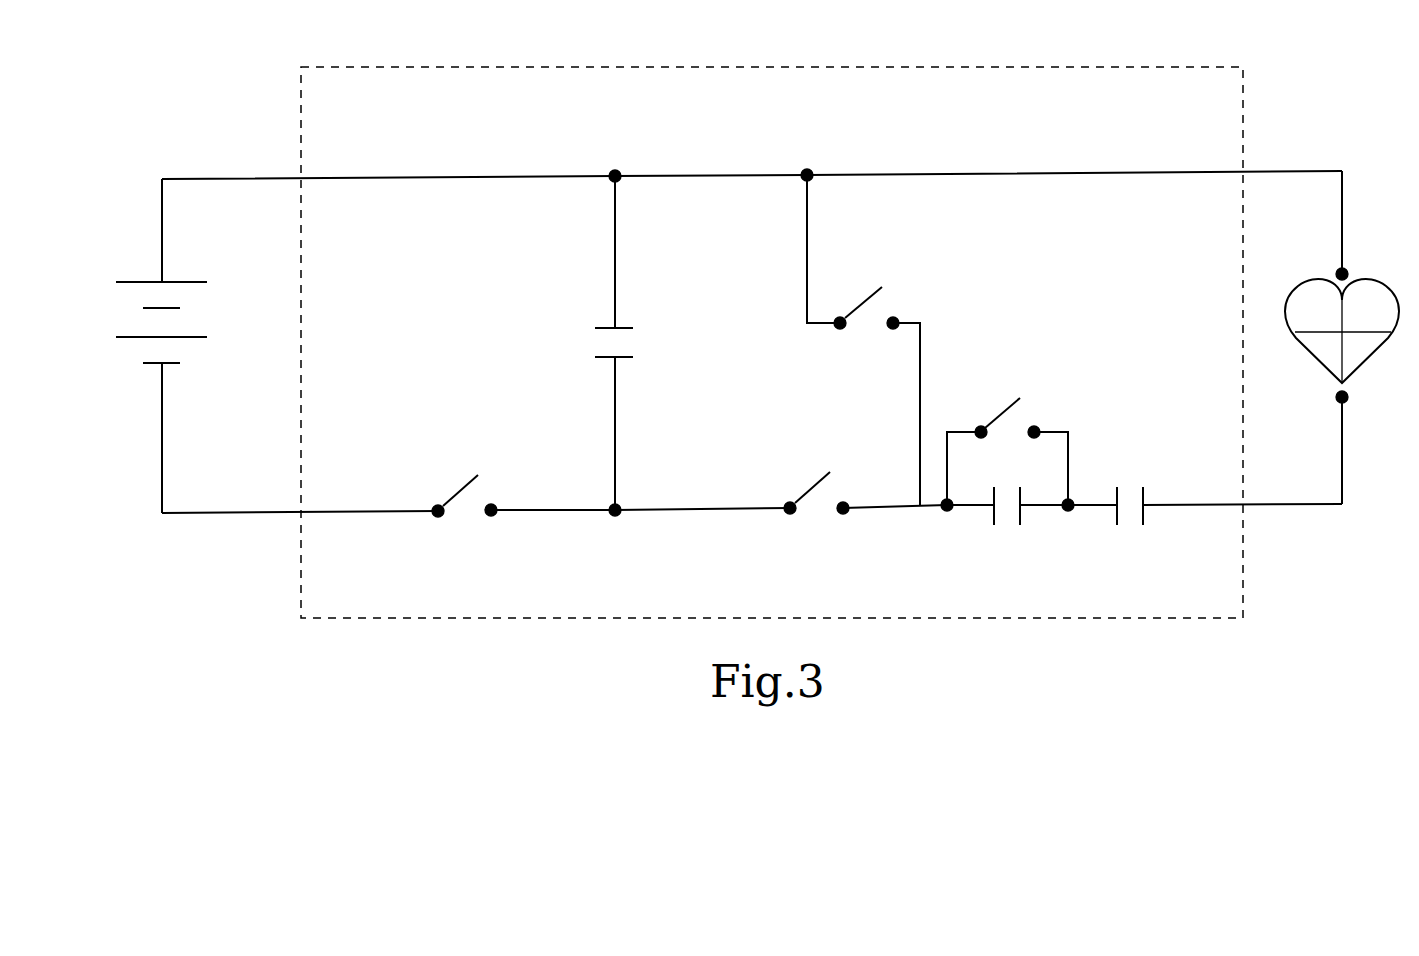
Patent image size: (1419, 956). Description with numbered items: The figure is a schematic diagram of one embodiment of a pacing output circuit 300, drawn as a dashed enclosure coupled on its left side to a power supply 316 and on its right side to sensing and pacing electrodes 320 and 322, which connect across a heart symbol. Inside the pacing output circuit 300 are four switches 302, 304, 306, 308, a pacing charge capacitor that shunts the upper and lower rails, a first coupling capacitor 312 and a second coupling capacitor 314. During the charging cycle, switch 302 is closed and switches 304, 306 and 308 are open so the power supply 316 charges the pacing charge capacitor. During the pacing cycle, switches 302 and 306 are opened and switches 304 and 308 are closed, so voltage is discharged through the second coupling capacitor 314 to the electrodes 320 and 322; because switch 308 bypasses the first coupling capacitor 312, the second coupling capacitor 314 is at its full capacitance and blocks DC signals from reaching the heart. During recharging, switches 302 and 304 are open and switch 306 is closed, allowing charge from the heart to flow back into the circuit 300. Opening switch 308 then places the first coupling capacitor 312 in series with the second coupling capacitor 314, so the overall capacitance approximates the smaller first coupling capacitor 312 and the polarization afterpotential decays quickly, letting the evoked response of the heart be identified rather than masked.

The pacing output circuit 300 is at (763, 79).
The switch 302 is at (463, 517).
The switch 304 is at (816, 515).
The switch 306 is at (868, 328).
The switch 308 is at (1009, 438).
The first coupling capacitor 312 is at (1007, 514).
The second coupling capacitor 314 is at (1130, 514).
The power supply 316 is at (140, 281).
The sensing and pacing electrode 320 is at (1348, 402).
The sensing and pacing electrode 322 is at (1348, 270).